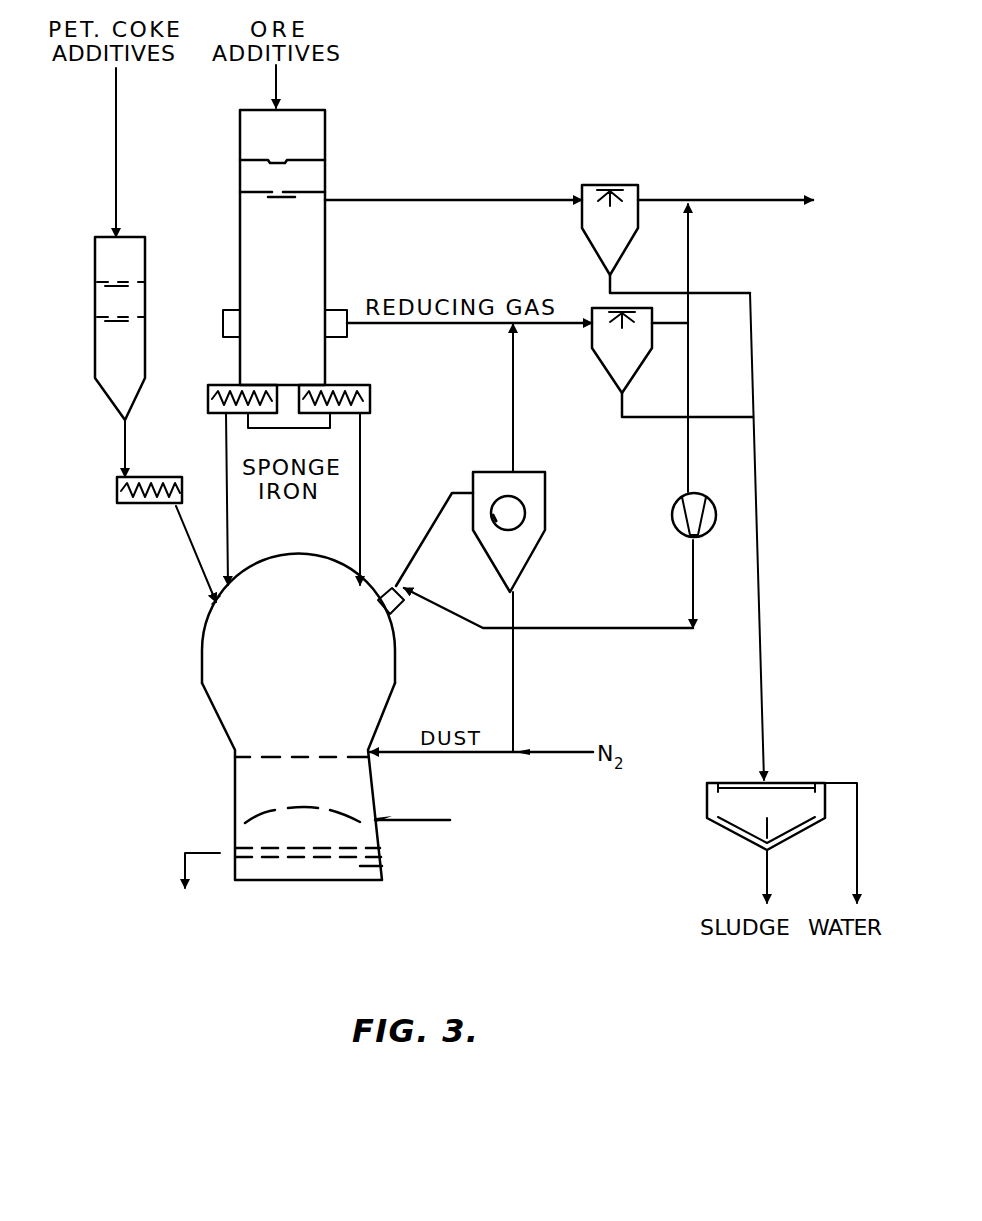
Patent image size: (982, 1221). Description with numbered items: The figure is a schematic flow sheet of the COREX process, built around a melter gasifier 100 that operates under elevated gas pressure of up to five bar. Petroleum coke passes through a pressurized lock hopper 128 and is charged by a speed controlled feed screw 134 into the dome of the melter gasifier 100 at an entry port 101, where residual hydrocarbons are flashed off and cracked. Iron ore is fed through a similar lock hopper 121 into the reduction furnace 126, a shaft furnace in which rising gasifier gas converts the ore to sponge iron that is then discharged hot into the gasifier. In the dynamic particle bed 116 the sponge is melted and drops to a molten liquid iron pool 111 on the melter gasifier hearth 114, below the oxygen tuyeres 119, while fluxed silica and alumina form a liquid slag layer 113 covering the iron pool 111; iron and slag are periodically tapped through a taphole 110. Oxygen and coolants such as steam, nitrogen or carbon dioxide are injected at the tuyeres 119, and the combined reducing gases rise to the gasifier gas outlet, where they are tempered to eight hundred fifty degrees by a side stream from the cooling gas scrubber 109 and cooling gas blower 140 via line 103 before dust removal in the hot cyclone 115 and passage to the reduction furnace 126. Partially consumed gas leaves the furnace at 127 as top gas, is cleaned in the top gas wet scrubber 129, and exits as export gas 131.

The melter gasifier 100 is at (200, 668).
The entry port 101 is at (216, 602).
The line 103 is at (600, 626).
The cooling gas scrubber 109 is at (605, 374).
The taphole 110 is at (230, 846).
The molten liquid iron pool 111 is at (378, 867).
The liquid slag layer 113 is at (250, 848).
The melter gasifier hearth 114 is at (383, 848).
The hot cyclone 115 is at (548, 498).
The dynamic particle bed 116 is at (292, 673).
The tuyeres 119 is at (388, 590).
The lock hopper 121 is at (240, 166).
The reduction furnace 126 is at (240, 233).
The top gas discharge 127 is at (328, 197).
The pressurized lock hopper 128 is at (95, 262).
The top gas wet scrubber 129 is at (608, 188).
The export gas 131 is at (768, 204).
The speed controlled feed screw 134 is at (117, 490).
The cooling gas blower 140 is at (672, 512).